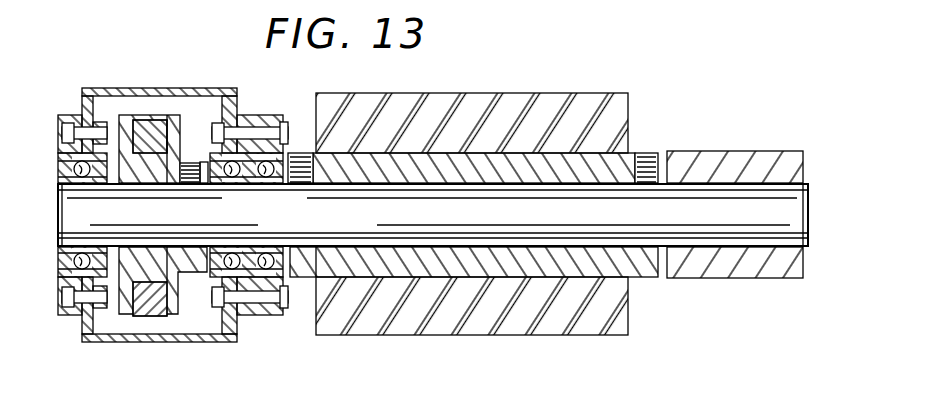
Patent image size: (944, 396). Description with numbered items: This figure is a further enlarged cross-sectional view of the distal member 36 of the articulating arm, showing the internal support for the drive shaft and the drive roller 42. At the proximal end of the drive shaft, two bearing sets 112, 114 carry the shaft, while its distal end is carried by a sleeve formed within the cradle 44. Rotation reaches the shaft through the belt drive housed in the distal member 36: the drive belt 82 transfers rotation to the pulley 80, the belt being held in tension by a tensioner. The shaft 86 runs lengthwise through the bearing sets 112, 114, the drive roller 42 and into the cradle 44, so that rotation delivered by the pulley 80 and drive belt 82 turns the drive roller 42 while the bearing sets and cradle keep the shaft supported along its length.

The distal member 36 is at (188, 90).
The pulley 80 is at (86, 104).
The drive belt 82 is at (141, 124).
The shaft 86 is at (318, 223).
The drive roller 42 is at (563, 333).
The cradle 44 is at (739, 152).
The bearing set 112 is at (62, 272).
The bearing set 114 is at (261, 313).